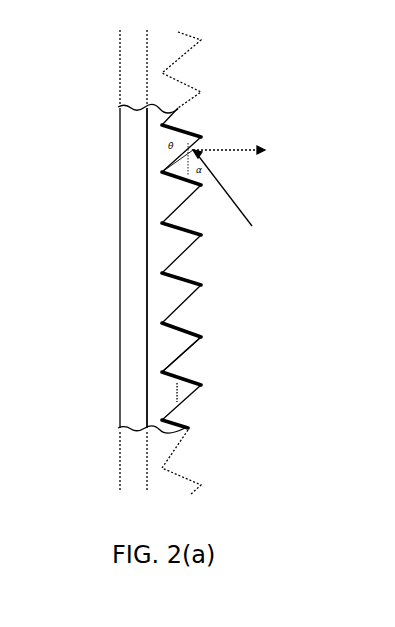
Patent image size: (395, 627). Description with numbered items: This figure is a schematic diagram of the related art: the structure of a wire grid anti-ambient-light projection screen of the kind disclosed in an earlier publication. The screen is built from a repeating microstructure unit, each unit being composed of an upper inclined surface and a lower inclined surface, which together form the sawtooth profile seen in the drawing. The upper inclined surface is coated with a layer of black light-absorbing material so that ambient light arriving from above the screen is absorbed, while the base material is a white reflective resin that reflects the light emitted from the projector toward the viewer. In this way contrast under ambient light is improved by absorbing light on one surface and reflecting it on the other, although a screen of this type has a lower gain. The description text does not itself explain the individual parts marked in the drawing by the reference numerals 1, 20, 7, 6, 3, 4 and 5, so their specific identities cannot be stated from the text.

The light guide plate 1 is at (98, 462).
The reflective layer 20 is at (148, 252).
The inner layer of light guide plate 7 is at (133, 192).
The air gap 6 is at (170, 345).
The prism structure 3 is at (188, 398).
The reflective facet 4 is at (190, 378).
The connecting facet 5 is at (188, 428).